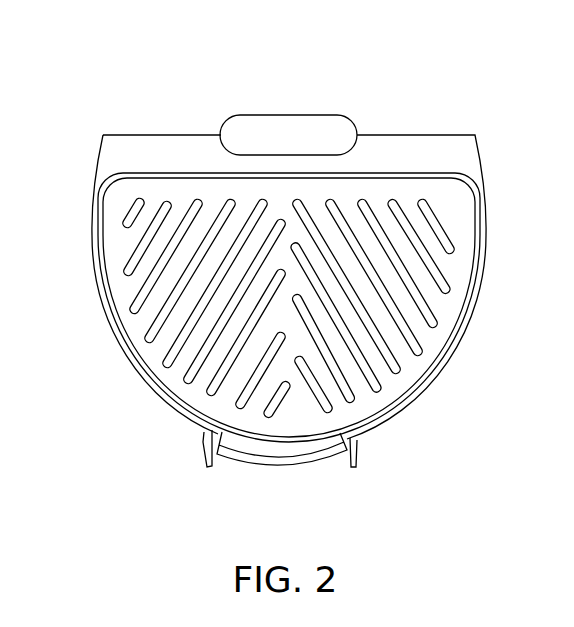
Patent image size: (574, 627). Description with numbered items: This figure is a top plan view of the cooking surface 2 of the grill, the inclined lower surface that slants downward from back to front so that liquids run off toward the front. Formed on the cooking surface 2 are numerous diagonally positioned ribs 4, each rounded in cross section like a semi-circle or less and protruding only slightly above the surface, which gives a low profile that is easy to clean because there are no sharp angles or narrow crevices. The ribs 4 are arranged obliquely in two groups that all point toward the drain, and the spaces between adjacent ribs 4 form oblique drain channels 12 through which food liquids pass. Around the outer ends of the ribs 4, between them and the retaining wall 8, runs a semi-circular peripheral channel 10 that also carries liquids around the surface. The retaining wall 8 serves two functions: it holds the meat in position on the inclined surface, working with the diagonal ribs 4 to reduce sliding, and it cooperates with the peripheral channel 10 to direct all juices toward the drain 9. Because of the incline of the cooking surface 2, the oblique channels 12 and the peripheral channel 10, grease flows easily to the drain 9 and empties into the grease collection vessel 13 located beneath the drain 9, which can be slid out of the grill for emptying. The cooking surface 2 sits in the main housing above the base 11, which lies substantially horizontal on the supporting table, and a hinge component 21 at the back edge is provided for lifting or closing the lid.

The cooking surface 2 is at (372, 427).
The ribs 4 is at (170, 203).
The retaining wall 8 is at (110, 197).
The drain 9 is at (234, 446).
The peripheral channel 10 is at (395, 394).
The base 11 is at (462, 332).
The oblique drain channels 12 is at (443, 270).
The grease collection vessel 13 is at (298, 467).
The hinge component 21 is at (288, 130).